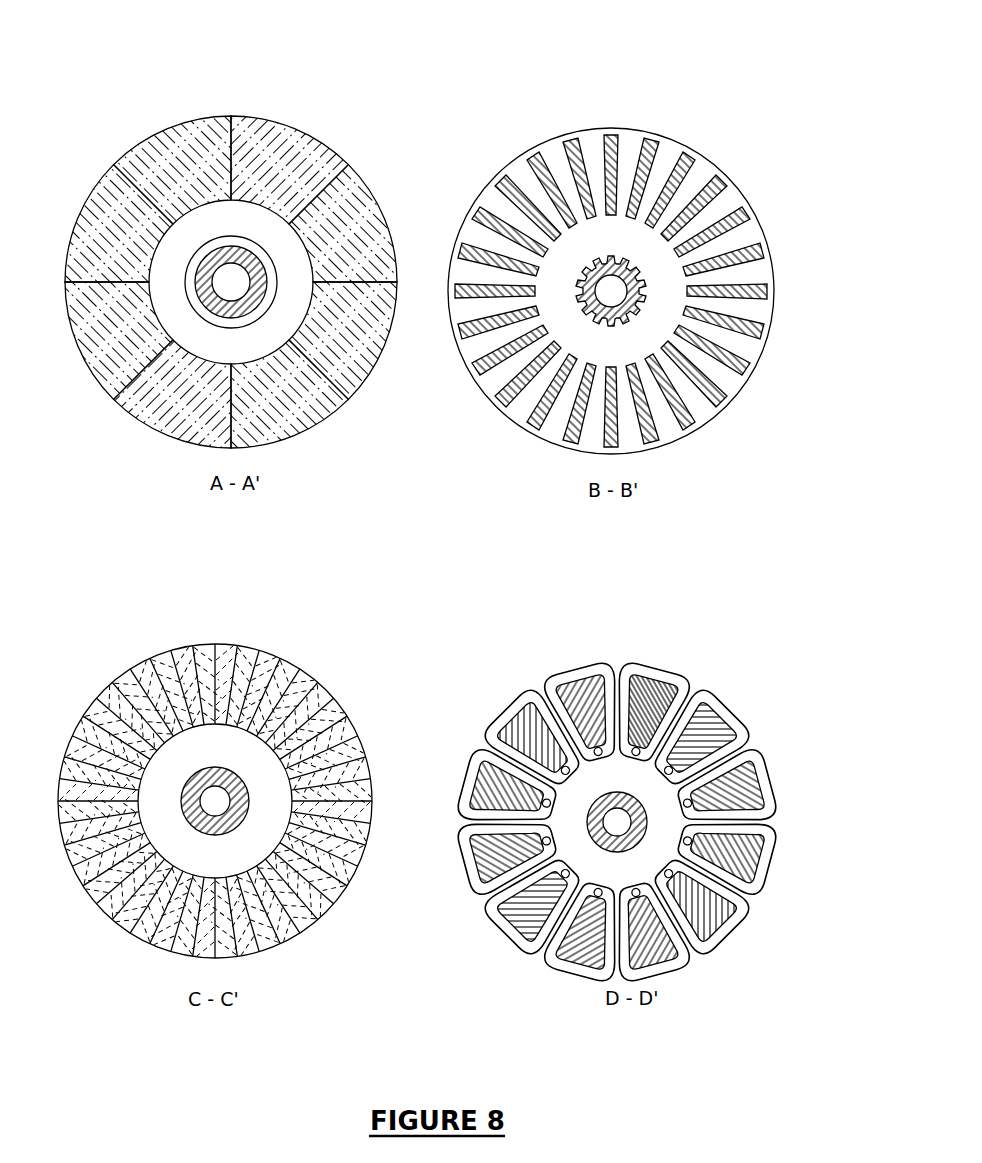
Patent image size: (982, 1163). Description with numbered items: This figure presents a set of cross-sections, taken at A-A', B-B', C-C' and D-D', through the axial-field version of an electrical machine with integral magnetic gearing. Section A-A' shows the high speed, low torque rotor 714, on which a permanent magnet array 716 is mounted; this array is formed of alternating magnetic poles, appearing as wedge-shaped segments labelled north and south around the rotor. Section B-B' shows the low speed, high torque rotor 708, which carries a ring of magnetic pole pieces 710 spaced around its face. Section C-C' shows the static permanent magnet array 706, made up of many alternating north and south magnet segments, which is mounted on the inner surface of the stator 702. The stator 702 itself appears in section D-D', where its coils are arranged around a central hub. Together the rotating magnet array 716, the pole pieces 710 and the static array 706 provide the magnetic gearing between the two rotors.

The high speed, low torque rotor 714 is at (233, 237).
The permanent magnet array 716 is at (307, 402).
The low speed, high torque rotor 708 is at (646, 237).
The magnetic pole pieces 710 is at (762, 295).
The static permanent magnet array 706 is at (343, 886).
The stator 702 is at (730, 713).